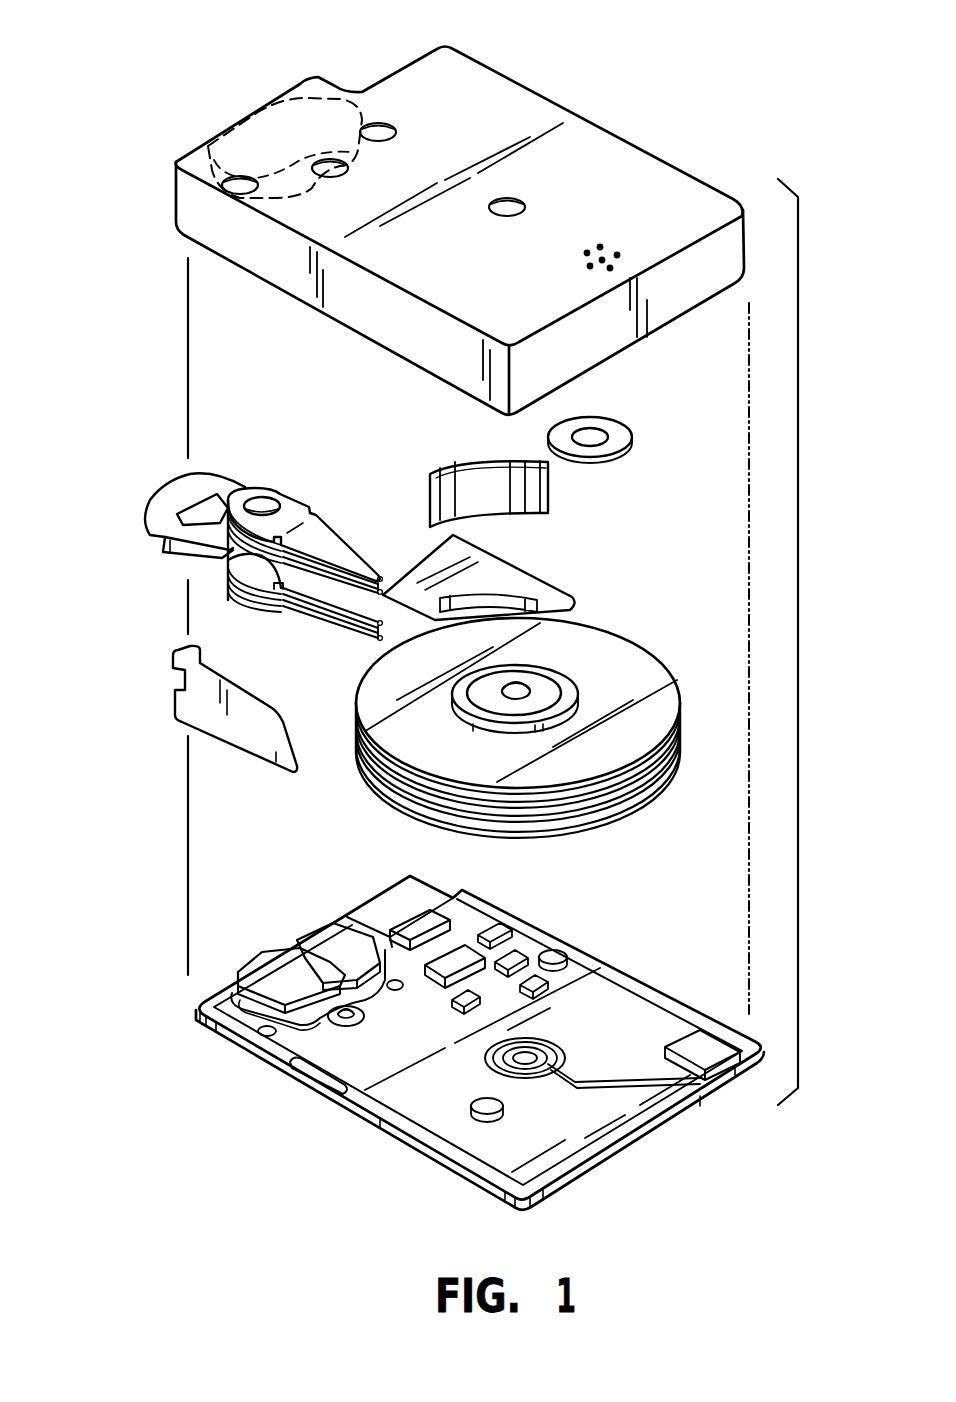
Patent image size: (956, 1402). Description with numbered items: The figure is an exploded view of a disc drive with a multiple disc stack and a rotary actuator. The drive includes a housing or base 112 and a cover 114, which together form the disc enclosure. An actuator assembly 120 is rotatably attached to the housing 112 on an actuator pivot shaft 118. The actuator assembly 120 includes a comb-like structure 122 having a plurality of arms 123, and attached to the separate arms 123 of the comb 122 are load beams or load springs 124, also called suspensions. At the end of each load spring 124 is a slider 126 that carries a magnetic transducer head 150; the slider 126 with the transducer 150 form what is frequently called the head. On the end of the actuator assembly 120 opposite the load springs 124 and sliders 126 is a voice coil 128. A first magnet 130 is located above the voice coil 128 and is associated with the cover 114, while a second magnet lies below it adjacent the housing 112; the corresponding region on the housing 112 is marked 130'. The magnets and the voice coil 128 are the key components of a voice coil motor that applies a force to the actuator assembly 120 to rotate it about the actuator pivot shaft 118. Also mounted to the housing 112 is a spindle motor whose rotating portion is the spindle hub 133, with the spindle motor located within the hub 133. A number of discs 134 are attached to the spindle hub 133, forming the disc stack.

The housing 112 is at (650, 1013).
The cover 114 is at (625, 165).
The actuator pivot shaft 118 is at (262, 500).
The actuator assembly 120 is at (210, 553).
The comb-like structure 122 is at (280, 608).
The arms 123 is at (322, 530).
The load springs 124 is at (331, 542).
The slider 126 is at (377, 574).
The voice coil 128 is at (165, 503).
The first magnet 130 is at (276, 124).
The electronic components 130' is at (306, 964).
The spindle hub 133 is at (521, 683).
The discs 134 is at (643, 670).
The magnetic transducer head 150 is at (392, 573).